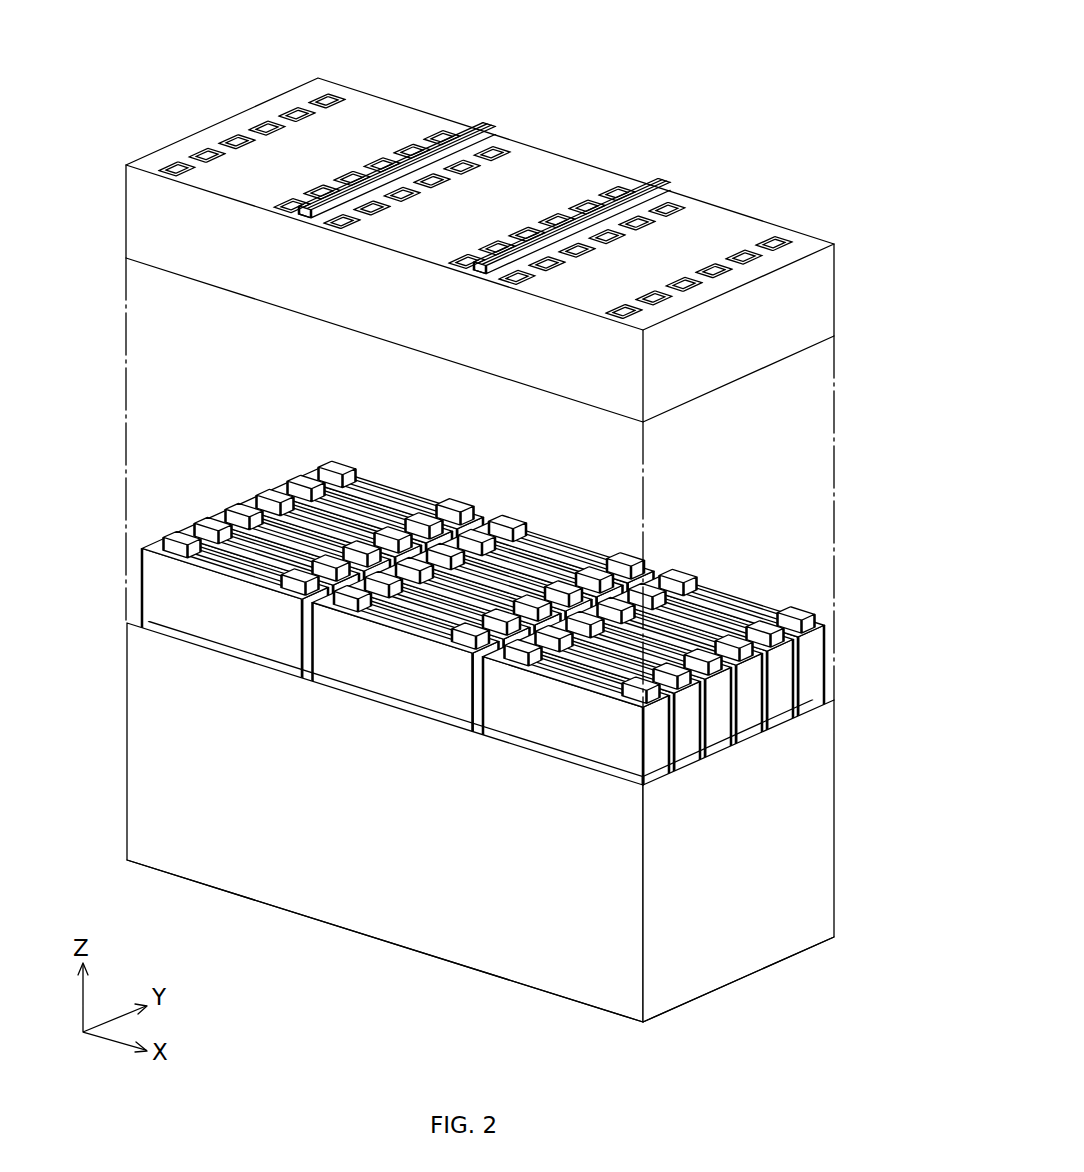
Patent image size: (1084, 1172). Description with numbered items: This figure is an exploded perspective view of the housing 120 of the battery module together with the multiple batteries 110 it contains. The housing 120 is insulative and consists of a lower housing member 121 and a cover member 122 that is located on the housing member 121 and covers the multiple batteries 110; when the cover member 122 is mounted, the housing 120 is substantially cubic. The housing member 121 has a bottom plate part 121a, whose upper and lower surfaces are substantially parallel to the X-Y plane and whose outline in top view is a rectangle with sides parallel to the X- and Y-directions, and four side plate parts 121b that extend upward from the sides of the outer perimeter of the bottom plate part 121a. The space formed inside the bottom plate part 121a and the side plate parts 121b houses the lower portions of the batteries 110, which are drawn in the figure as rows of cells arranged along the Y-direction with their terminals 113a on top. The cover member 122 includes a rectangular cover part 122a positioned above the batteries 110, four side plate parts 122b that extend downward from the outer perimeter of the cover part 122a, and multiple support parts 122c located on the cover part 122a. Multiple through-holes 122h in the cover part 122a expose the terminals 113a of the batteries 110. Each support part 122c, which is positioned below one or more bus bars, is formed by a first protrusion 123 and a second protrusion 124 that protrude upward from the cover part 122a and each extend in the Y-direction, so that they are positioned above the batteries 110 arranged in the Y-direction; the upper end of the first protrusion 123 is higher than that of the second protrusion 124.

The battery 110 is at (148, 585).
The terminal 113a is at (297, 572).
The housing 120 is at (502, 545).
The housing member 121 is at (475, 799).
The bottom plate part 121a is at (608, 1018).
The side plate part 121b is at (126, 621).
The cover member 122 is at (474, 411).
The cover part 122a is at (383, 118).
The side plate part 122b is at (127, 215).
The support part 122c is at (497, 128).
The through-hole 122h is at (300, 207).
The first protrusion 123 is at (489, 128).
The second protrusion 124 is at (535, 164).